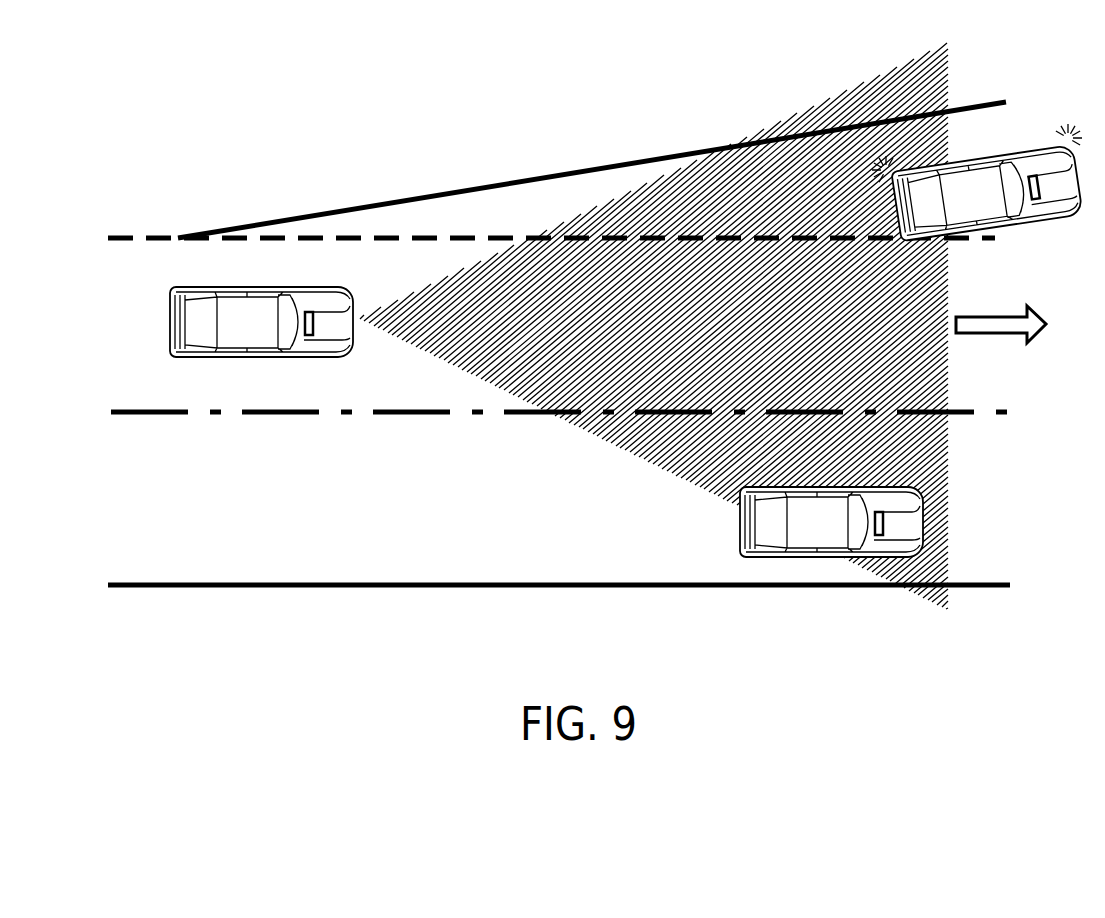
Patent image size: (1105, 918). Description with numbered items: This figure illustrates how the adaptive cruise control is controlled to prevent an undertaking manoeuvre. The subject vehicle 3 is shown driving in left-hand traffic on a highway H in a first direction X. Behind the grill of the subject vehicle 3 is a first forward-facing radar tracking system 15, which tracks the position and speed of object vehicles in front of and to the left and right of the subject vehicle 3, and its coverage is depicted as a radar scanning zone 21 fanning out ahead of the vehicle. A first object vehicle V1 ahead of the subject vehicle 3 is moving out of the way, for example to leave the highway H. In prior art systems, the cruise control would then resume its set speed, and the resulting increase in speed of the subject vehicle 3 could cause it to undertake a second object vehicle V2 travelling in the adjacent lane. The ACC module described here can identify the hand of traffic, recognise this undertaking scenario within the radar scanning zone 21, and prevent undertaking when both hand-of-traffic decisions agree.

The subject vehicle 3 is at (247, 327).
The first forward-facing radar tracking system 15 is at (356, 319).
The radar scanning zone 21 is at (668, 210).
The highway H is at (340, 543).
The first object vehicle V1 is at (972, 205).
The second object vehicle V2 is at (905, 520).
The first direction X is at (1001, 313).